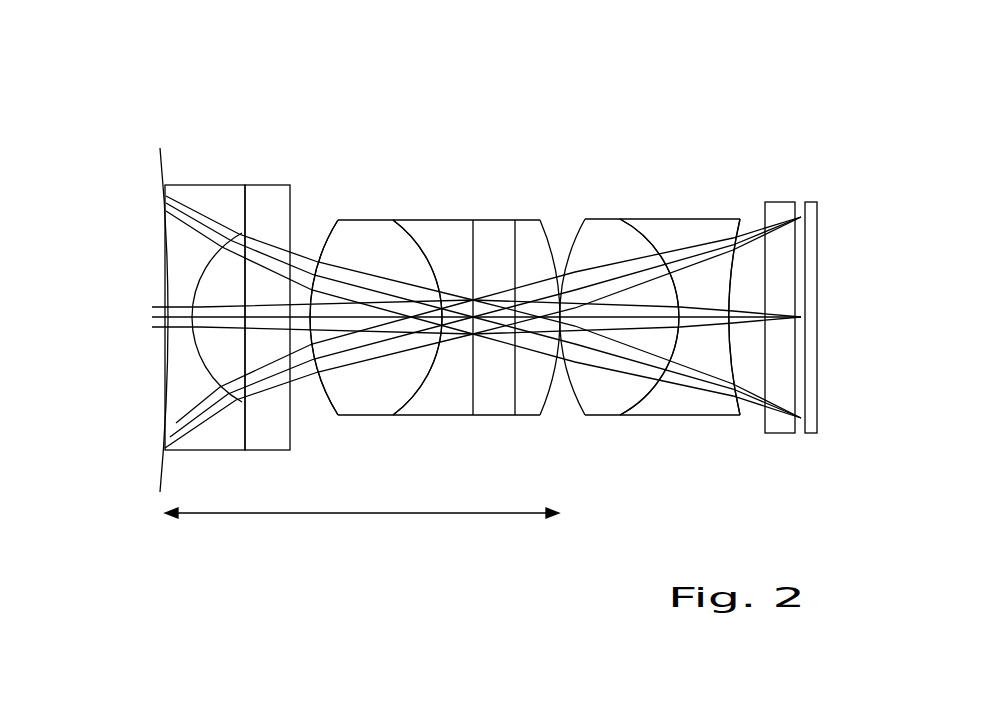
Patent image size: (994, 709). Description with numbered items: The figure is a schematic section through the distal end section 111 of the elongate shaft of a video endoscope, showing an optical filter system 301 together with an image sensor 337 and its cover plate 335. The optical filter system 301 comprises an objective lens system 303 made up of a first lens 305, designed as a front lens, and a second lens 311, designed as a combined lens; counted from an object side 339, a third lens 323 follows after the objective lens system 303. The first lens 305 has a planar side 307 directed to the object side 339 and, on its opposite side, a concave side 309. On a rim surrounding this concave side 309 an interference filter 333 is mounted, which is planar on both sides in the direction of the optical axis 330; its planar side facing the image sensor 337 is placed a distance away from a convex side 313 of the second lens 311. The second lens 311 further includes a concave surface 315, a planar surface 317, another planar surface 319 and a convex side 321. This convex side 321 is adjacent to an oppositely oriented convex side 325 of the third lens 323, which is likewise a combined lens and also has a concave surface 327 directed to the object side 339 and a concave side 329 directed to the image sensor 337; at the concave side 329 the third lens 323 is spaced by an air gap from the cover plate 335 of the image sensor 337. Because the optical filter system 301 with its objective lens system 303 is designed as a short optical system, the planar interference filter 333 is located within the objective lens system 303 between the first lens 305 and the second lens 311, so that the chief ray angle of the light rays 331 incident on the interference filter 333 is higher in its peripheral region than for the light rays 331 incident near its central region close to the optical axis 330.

The distal end section 111 is at (476, 24).
The optical filter system 301 is at (414, 180).
The objective lens system 303 is at (362, 529).
The first lens 305 is at (200, 197).
The planar side 307 is at (163, 258).
The concave side 309 is at (163, 343).
The second lens 311 is at (380, 227).
The convex side 313 is at (336, 236).
The concave surface 315 is at (415, 242).
The planar surface 317 is at (475, 237).
The planar surface 319 is at (542, 223).
The convex side 321 is at (550, 237).
The third lens 323 is at (607, 418).
The convex side 325 is at (578, 405).
The concave surface 327 is at (642, 392).
The concave side 329 is at (731, 366).
The optical axis 330 is at (678, 315).
The light rays 331 is at (174, 434).
The interference filter 333 is at (285, 427).
The cover plate 335 is at (778, 210).
The image sensor 337 is at (817, 230).
The object side 339 is at (95, 191).